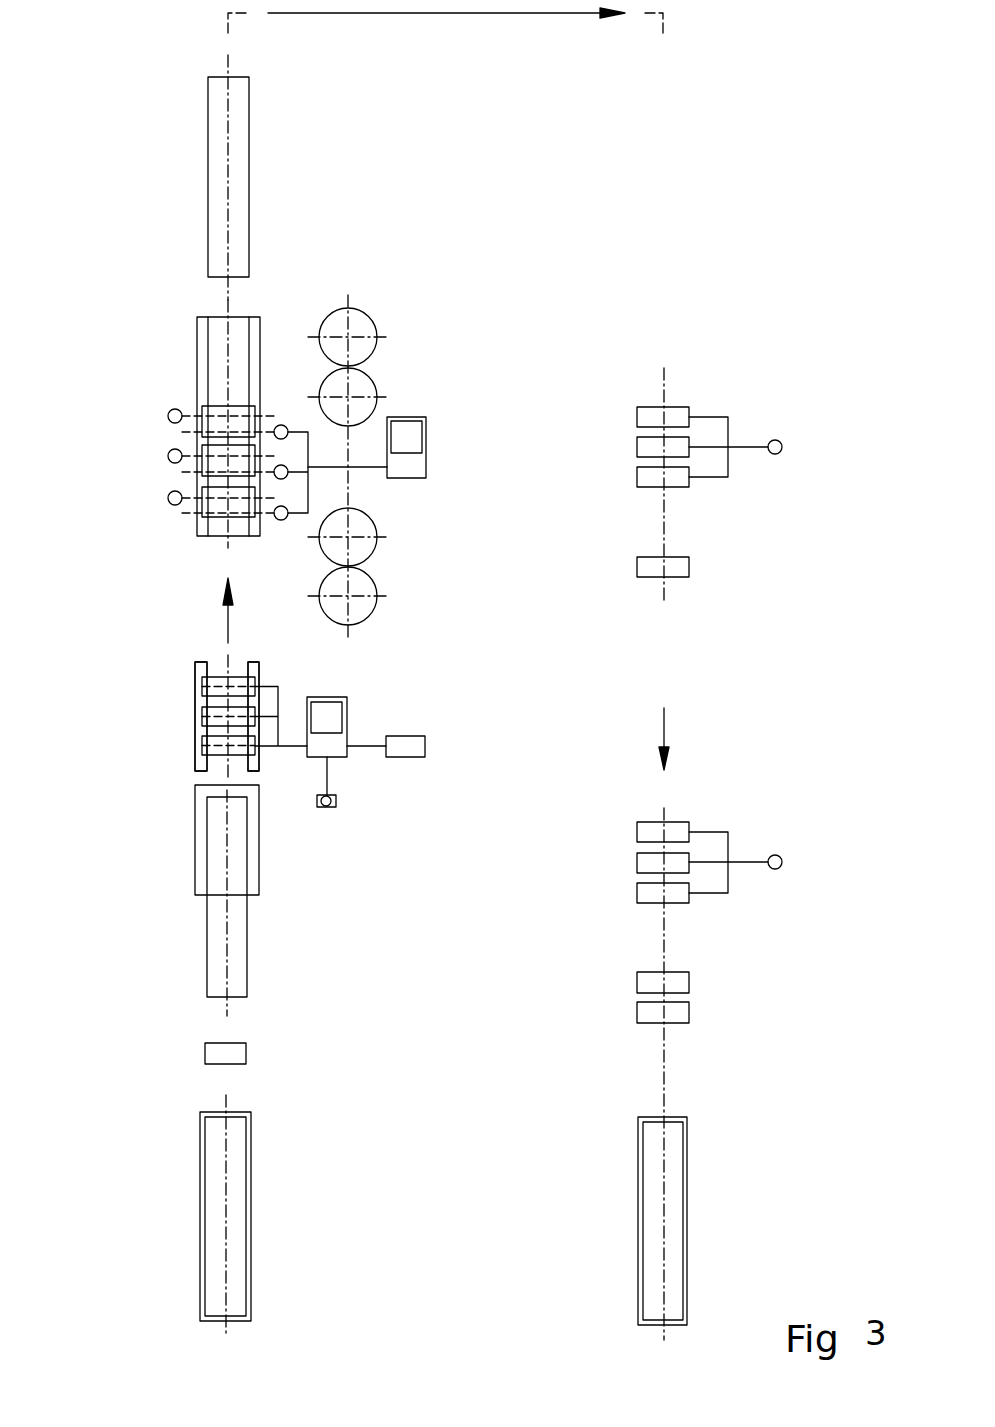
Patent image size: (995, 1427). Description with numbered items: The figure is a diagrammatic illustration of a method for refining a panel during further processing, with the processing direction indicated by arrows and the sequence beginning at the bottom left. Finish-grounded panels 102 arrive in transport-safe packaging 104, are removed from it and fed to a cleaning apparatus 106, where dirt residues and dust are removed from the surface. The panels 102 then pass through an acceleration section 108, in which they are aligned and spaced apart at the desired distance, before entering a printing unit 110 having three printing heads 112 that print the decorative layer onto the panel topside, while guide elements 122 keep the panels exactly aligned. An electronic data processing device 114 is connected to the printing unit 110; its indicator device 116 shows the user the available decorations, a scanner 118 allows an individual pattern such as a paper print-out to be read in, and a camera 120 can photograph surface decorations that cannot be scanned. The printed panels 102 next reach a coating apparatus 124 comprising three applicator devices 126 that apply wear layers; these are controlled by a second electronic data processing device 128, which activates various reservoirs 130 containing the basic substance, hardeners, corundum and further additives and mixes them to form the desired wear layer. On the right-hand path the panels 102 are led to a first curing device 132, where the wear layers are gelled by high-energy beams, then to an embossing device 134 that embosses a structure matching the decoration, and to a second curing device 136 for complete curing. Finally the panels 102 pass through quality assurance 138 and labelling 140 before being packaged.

The panel 102 is at (238, 172).
The transport-safe packaging 104 is at (250, 1183).
The cleaning apparatus 106 is at (235, 1052).
The acceleration section 108 is at (255, 855).
The printing unit 110 is at (165, 691).
The printing heads 112 is at (242, 748).
The electronic data processing device 114 is at (337, 745).
The indicator device 116 is at (328, 713).
The scanner 118 is at (412, 748).
The camera 120 is at (337, 801).
The guide elements 122 is at (205, 325).
The coating apparatus 124 is at (152, 348).
The applicator devices 126 is at (215, 422).
The second electronic data processing device 128 is at (410, 465).
The reservoirs 130 is at (363, 332).
The first curing device 132 is at (717, 402).
The embossing device 134 is at (675, 567).
The second curing device 136 is at (719, 806).
The quality assurance 138 is at (676, 985).
The labelling 140 is at (676, 1012).